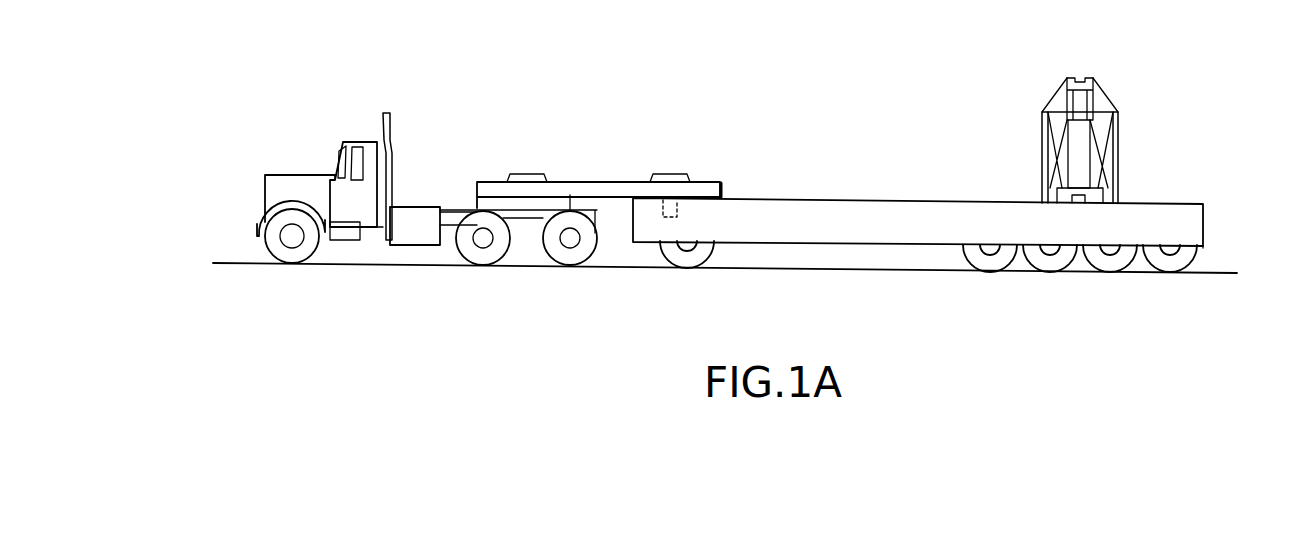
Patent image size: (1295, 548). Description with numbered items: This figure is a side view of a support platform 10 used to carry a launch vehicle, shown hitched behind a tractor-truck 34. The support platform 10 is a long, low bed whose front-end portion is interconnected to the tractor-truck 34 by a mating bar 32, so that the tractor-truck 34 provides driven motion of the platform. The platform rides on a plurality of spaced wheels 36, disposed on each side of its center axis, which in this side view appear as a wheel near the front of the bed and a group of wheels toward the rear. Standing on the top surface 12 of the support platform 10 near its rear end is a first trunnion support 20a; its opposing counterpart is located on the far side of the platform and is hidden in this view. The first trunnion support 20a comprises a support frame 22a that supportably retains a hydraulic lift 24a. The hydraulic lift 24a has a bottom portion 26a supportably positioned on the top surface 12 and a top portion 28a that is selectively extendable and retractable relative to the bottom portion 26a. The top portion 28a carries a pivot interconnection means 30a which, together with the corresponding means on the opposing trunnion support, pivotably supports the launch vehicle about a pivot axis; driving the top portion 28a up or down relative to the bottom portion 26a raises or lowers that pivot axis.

The support platform 10 is at (807, 188).
The top surface 12 is at (890, 198).
The first trunnion support 20a is at (1121, 83).
The support frame 22a is at (1118, 176).
The hydraulic lift 24a is at (1093, 137).
The bottom portion 26a is at (1080, 173).
The top portion 28a is at (1085, 108).
The pivot interconnection means 30a is at (1080, 78).
The mating bar 32 is at (593, 182).
The tractor-truck 34 is at (278, 187).
The wheels 36 is at (693, 267).